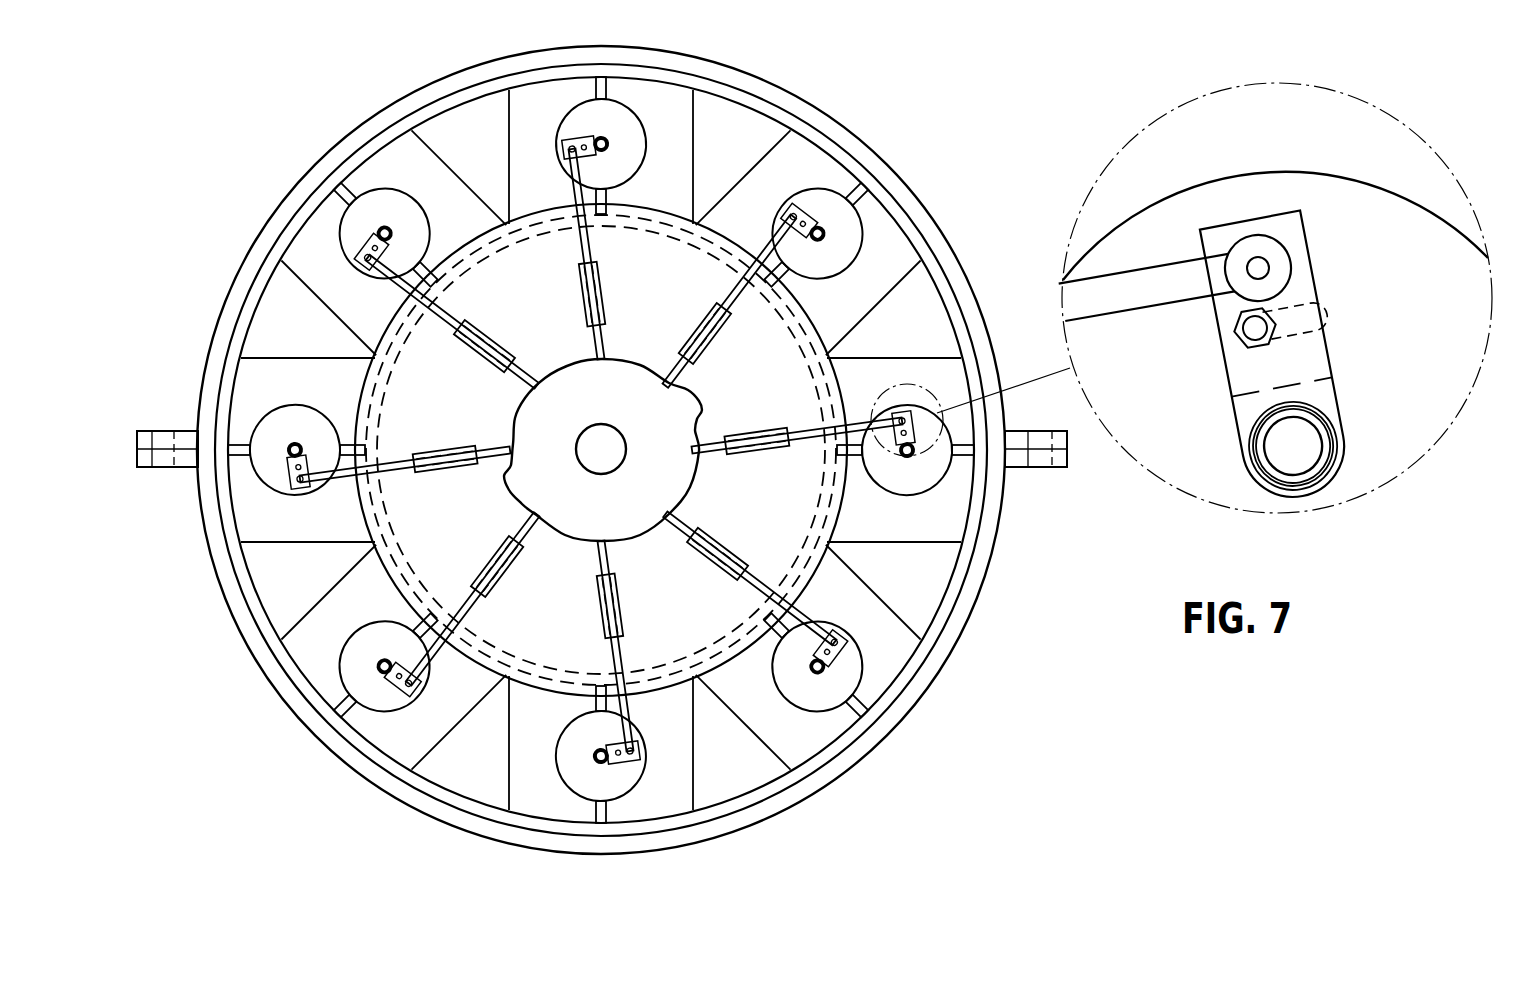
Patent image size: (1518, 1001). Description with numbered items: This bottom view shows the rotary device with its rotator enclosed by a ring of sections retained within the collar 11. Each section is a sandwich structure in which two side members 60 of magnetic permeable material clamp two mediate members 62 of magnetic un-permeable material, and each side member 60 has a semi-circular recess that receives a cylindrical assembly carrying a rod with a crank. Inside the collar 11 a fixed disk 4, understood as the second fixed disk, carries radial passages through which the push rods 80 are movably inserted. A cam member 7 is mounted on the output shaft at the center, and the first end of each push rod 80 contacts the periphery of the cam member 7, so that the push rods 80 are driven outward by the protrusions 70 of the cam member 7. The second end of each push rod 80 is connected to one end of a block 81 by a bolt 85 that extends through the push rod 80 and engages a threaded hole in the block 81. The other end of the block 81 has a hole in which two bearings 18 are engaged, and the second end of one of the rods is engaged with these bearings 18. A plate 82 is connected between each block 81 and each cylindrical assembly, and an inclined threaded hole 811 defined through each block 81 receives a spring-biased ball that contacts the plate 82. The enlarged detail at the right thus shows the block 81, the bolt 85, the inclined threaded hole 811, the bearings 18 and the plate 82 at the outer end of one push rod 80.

The collar 11 is at (305, 207).
The protrusions 70 is at (693, 407).
The inner ring 4 is at (787, 358).
The push rod 80 is at (807, 400).
The side member 60 is at (952, 375).
The mediate member 62 is at (975, 450).
The plate 82 is at (913, 477).
The cam member 7 is at (667, 487).
The block 81 is at (1213, 235).
The inclined threaded hole 811 is at (1300, 323).
The bolt 85 is at (1258, 268).
The bearings 18 is at (1337, 447).